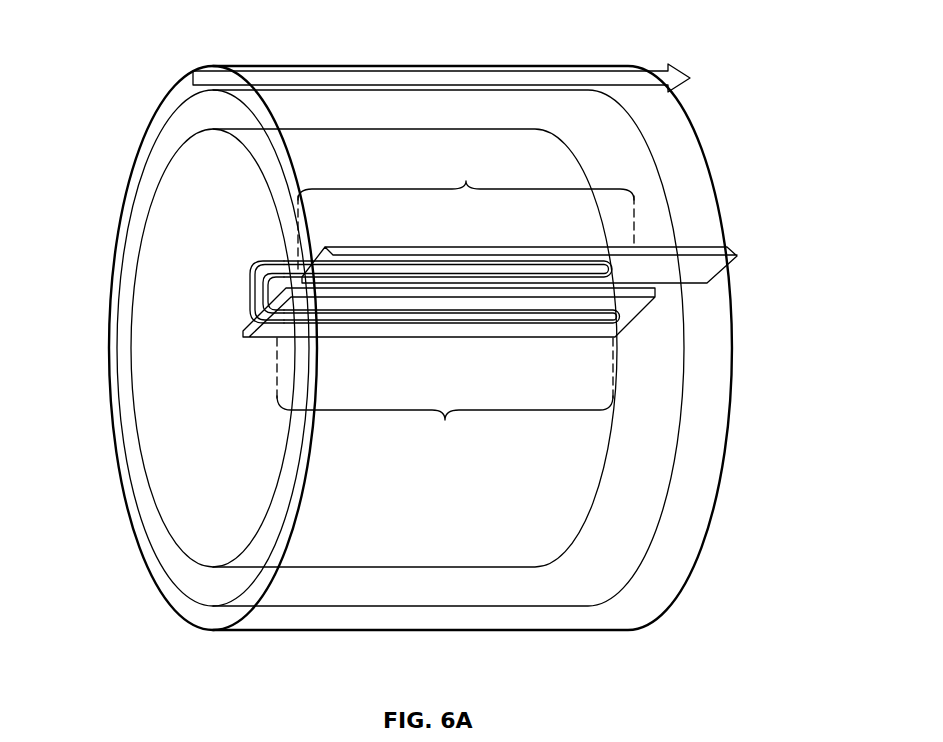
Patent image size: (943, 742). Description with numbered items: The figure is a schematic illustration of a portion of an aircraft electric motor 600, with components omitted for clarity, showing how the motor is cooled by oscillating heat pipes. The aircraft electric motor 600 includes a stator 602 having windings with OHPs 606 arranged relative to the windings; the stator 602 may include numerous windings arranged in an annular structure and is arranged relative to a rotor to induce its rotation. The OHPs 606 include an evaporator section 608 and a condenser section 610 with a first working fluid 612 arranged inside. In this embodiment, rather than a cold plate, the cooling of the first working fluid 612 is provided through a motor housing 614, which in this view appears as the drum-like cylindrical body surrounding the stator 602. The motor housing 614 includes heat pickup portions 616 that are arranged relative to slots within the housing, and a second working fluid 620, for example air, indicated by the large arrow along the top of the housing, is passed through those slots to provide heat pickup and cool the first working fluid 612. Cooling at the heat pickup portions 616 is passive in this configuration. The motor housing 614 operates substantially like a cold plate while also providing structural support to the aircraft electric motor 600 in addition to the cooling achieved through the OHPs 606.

The aircraft electric motor 600 is at (132, 24).
The stator 602 is at (147, 312).
The OHPs 606 is at (623, 303).
The evaporator section 608 is at (445, 399).
The condenser section 610 is at (466, 211).
The first working fluid 612 is at (250, 284).
The motor housing 614 is at (203, 619).
The heat pickup portions 616 is at (708, 266).
The second working fluid 620 is at (672, 64).